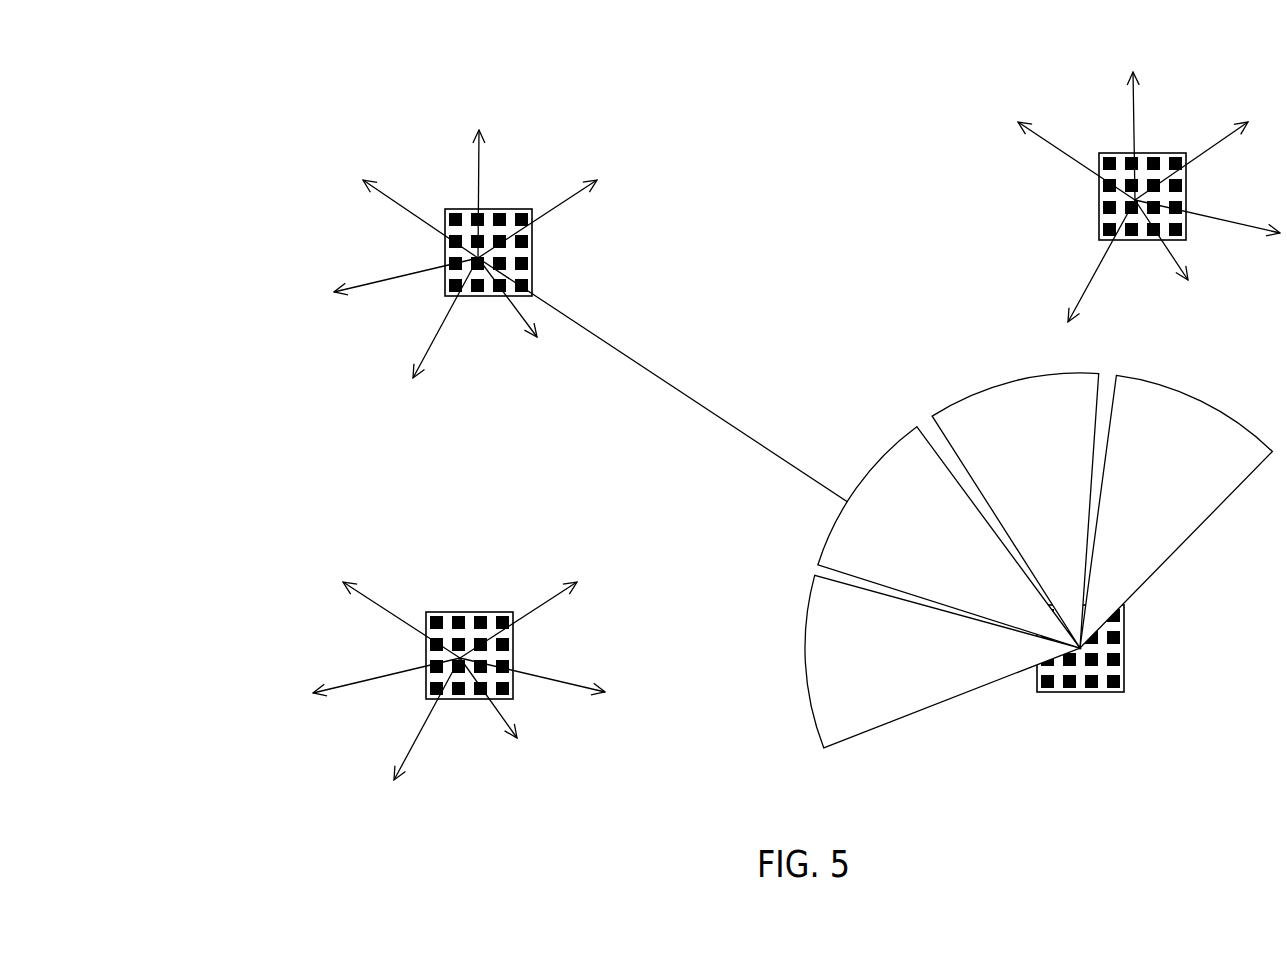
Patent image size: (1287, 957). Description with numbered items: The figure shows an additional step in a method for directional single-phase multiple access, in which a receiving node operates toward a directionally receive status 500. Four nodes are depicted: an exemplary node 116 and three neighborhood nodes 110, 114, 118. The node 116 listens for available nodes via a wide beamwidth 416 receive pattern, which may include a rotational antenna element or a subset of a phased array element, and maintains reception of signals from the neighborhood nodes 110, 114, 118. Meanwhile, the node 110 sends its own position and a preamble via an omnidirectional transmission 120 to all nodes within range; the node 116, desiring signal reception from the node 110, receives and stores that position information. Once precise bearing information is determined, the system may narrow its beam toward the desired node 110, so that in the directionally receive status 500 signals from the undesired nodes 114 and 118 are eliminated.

The directionally receive status 500 is at (238, 128).
The node 110 is at (502, 209).
The node 114 is at (1155, 153).
The node 118 is at (483, 612).
The node 116 is at (1124, 648).
The omnidirectional transmission 120 is at (670, 368).
The wide beamwidth 416 is at (1131, 378).